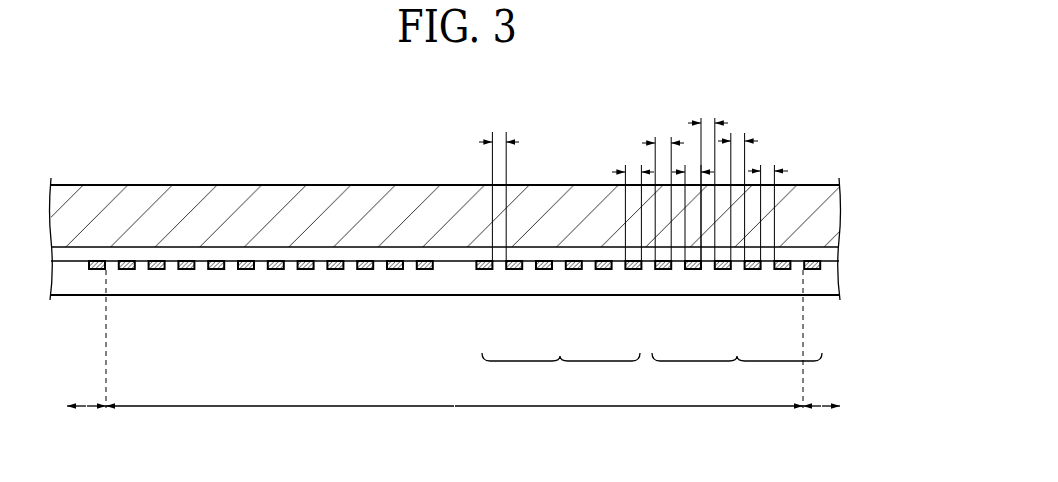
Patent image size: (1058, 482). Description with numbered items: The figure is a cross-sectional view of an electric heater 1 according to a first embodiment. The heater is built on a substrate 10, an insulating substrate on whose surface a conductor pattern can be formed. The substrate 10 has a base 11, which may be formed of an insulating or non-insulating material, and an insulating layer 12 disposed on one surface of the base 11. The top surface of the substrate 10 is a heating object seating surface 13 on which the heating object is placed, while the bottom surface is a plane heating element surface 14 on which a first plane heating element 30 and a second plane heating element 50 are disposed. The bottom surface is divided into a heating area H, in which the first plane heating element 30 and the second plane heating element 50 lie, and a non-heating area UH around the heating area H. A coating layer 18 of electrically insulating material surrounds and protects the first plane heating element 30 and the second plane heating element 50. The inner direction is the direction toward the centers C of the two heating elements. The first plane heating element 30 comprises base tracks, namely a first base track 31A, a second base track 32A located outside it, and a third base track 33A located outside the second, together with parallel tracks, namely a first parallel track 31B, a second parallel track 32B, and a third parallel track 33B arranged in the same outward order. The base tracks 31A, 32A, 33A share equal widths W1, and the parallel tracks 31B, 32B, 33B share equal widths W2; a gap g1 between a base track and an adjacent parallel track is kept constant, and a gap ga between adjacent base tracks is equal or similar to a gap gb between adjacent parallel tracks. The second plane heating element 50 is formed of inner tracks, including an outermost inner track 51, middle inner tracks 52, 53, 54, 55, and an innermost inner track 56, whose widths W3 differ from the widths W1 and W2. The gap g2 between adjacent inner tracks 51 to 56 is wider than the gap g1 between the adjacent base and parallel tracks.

The electric heater 1 is at (823, 152).
The substrate 10 is at (898, 212).
The base 11 is at (841, 219).
The insulating layer 12 is at (841, 255).
The heating object seating surface 13 is at (232, 185).
The plane heating element surface 14 is at (175, 262).
The coating layer 18 is at (841, 280).
The center C is at (455, 260).
The first plane heating element 30 is at (737, 371).
The first base track 31A is at (663, 269).
The first parallel track 31B is at (693, 269).
The second base track 32A is at (752, 269).
The second parallel track 32B is at (723, 269).
The third base track 33A is at (782, 269).
The third parallel track 33B is at (812, 269).
The second plane heating element 50 is at (561, 371).
The outermost inner track 51 is at (634, 269).
The middle inner track 52 is at (604, 269).
The middle inner track 53 is at (574, 269).
The middle inner track 54 is at (544, 269).
The middle inner track 55 is at (514, 269).
The innermost inner track 56 is at (484, 269).
The gap g1 is at (738, 185).
The gap g2 is at (499, 184).
The gap ga is at (768, 200).
The gap gb is at (708, 177).
The width W1 is at (663, 189).
The width W2 is at (693, 204).
The width W3 is at (633, 204).
The heating area H is at (454, 350).
The non-heating area UH is at (453, 418).